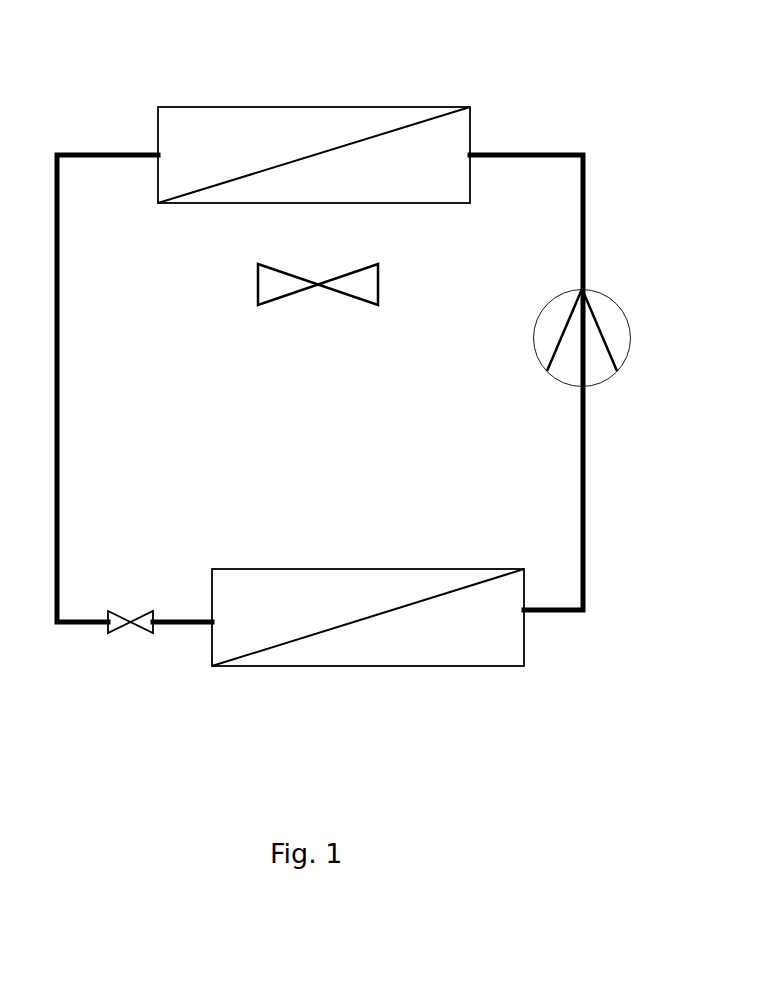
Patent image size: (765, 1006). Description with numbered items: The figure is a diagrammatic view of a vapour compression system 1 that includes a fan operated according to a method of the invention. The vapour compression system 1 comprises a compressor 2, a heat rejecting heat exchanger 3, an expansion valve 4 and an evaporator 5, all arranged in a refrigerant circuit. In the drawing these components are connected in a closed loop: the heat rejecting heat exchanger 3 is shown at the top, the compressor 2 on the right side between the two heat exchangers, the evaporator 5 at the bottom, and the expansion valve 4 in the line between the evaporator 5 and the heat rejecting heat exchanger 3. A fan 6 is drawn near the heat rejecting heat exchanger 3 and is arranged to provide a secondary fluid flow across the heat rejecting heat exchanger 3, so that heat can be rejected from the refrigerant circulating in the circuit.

The vapour compression system 1 is at (592, 62).
The compressor 2 is at (617, 326).
The heat rejecting heat exchanger 3 is at (213, 130).
The expansion valve 4 is at (115, 623).
The evaporator 5 is at (469, 645).
The fan 6 is at (267, 291).